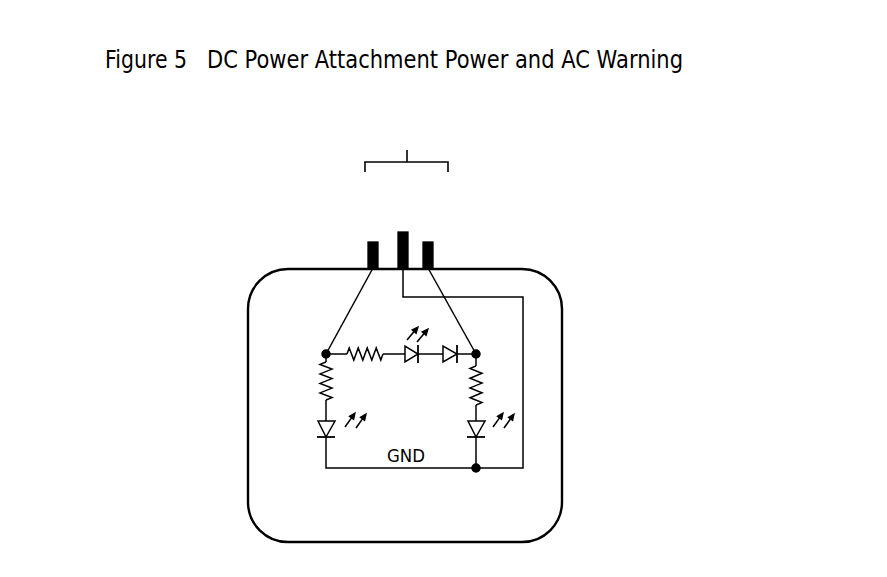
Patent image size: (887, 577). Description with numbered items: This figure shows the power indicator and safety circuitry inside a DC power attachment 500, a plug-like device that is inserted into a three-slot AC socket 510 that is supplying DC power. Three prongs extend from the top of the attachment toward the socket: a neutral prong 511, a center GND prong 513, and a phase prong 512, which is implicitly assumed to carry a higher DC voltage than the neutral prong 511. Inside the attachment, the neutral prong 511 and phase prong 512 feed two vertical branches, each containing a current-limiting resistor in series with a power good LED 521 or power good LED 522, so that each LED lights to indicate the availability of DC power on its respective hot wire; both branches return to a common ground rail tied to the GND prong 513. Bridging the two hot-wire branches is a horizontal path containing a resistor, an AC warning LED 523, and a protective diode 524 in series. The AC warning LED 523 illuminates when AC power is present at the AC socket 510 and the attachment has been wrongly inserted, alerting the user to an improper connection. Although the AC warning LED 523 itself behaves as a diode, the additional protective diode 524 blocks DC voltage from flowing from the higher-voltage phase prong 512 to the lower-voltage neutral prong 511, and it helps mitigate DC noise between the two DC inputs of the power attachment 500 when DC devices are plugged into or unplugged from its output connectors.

The DC power attachment 500 is at (298, 400).
The AC socket 510 is at (452, 143).
The neutral prong 511 is at (276, 238).
The phase prong 512 is at (585, 242).
The GND prong 513 is at (409, 227).
The power good LED 521 is at (249, 428).
The power good LED 522 is at (575, 432).
The AC warning LED 523 is at (338, 361).
The protective diode 524 is at (554, 332).